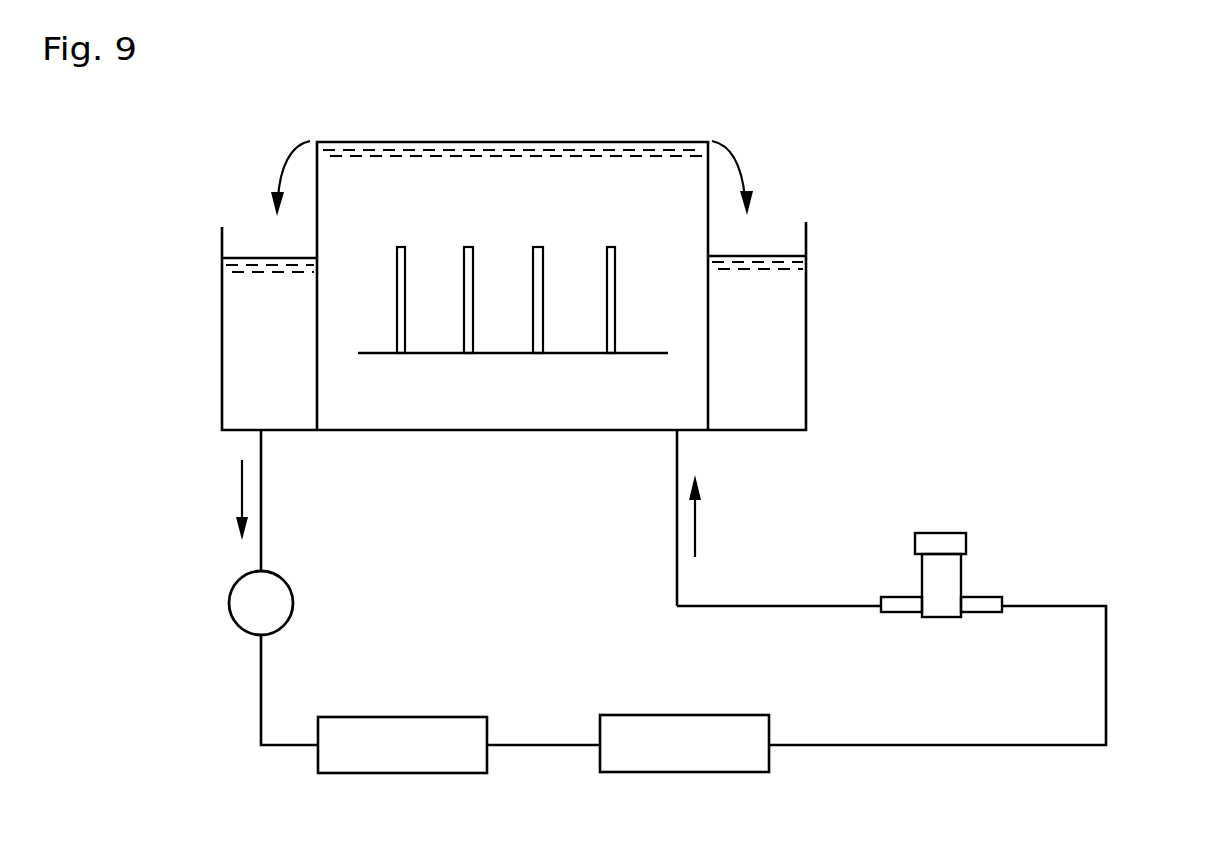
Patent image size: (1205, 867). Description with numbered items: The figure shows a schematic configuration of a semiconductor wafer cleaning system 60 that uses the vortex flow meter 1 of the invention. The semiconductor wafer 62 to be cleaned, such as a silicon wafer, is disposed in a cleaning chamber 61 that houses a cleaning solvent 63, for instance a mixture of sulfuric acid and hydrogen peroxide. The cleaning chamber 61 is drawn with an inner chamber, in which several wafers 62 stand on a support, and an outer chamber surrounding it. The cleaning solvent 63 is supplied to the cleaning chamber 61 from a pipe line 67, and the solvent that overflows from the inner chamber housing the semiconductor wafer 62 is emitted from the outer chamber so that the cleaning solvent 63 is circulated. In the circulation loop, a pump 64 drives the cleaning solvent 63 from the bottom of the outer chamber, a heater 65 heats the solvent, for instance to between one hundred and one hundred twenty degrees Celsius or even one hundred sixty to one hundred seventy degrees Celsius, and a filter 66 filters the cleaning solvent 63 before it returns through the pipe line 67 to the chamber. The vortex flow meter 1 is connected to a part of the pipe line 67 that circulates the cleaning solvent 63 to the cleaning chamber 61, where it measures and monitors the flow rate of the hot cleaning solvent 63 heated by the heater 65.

The semiconductor wafer cleaning system 60 is at (1082, 197).
The cleaning chamber 61 is at (806, 338).
The semiconductor wafer 62 is at (615, 292).
The cleaning solvent 63 is at (780, 297).
The pump 64 is at (293, 595).
The heater 65 is at (425, 773).
The filter 66 is at (697, 772).
The pipe line 67 is at (677, 575).
The vortex flow meter 1 is at (961, 578).